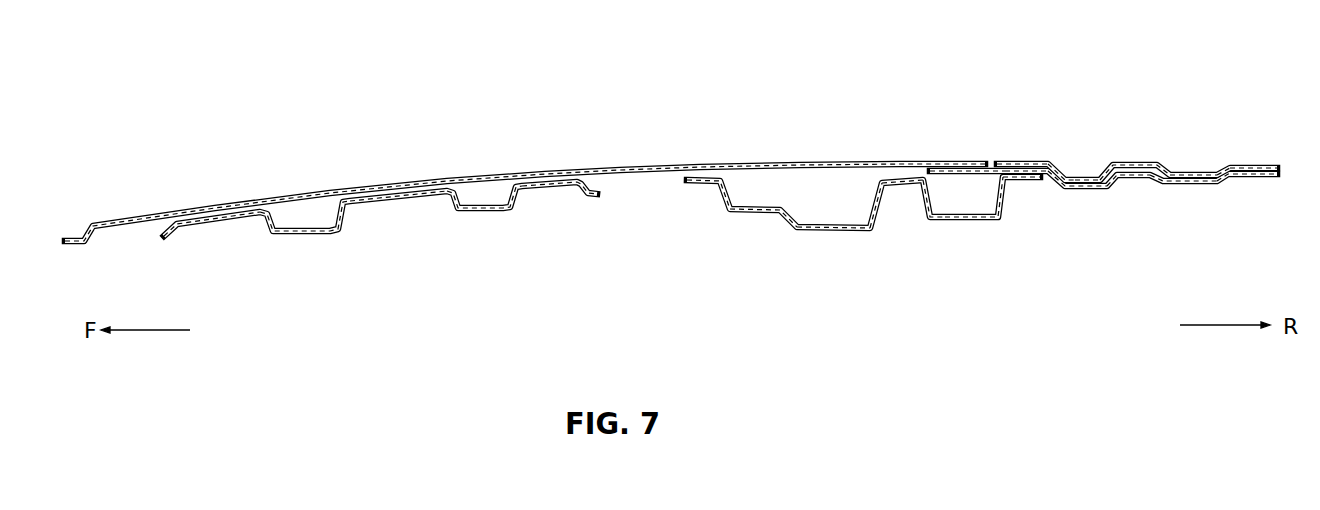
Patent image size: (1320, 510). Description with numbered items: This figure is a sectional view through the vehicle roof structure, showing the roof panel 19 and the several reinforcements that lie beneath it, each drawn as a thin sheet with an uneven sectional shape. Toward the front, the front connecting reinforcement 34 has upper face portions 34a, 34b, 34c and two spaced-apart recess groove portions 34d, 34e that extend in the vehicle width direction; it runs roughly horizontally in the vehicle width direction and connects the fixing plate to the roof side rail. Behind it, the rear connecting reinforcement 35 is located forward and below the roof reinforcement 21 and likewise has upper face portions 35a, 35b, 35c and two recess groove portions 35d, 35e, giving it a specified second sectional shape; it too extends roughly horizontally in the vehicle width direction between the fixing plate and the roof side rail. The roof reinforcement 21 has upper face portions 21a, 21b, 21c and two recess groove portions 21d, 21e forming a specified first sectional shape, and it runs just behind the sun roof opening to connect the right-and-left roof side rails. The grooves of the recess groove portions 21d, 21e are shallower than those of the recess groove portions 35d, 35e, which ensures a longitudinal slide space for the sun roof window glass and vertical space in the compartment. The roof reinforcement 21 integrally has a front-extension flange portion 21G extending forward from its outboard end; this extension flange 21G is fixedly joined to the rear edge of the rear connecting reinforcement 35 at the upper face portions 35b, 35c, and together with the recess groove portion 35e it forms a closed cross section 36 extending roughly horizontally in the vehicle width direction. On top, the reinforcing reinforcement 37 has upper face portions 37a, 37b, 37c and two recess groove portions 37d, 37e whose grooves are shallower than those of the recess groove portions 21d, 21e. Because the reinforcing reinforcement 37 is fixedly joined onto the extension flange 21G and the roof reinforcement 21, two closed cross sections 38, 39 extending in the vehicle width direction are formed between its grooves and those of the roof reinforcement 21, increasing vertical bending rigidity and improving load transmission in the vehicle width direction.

The roof panel 19 is at (625, 158).
The roof reinforcement 21 is at (1104, 196).
The front-extension flange portion 21G is at (926, 167).
The upper face portion 21a is at (1017, 167).
The upper face portion 21b is at (1145, 178).
The upper face portion 21c is at (1264, 177).
The recess groove portion 21d is at (1073, 189).
The recess groove portion 21e is at (1201, 184).
The front connecting reinforcement 34 is at (478, 222).
The upper face portion 34a is at (232, 220).
The upper face portion 34b is at (383, 200).
The upper face portion 34c is at (553, 187).
The recess groove portion 34d is at (306, 229).
The recess groove portion 34e is at (482, 205).
The rear connecting reinforcement 35 is at (963, 230).
The upper face portion 35a is at (705, 184).
The upper face portion 35b is at (903, 184).
The upper face portion 35c is at (1030, 181).
The recess groove portion 35d is at (817, 224).
The recess groove portion 35e is at (943, 221).
The closed cross section 36 is at (979, 192).
The reinforcing reinforcement 37 is at (1120, 153).
The upper face portion 37a is at (1002, 161).
The upper face portion 37b is at (1144, 164).
The upper face portion 37c is at (1241, 165).
The recess groove portion 37d is at (1097, 168).
The recess groove portion 37e is at (1180, 172).
The closed cross section 38 is at (1094, 186).
The closed cross section 39 is at (1207, 178).